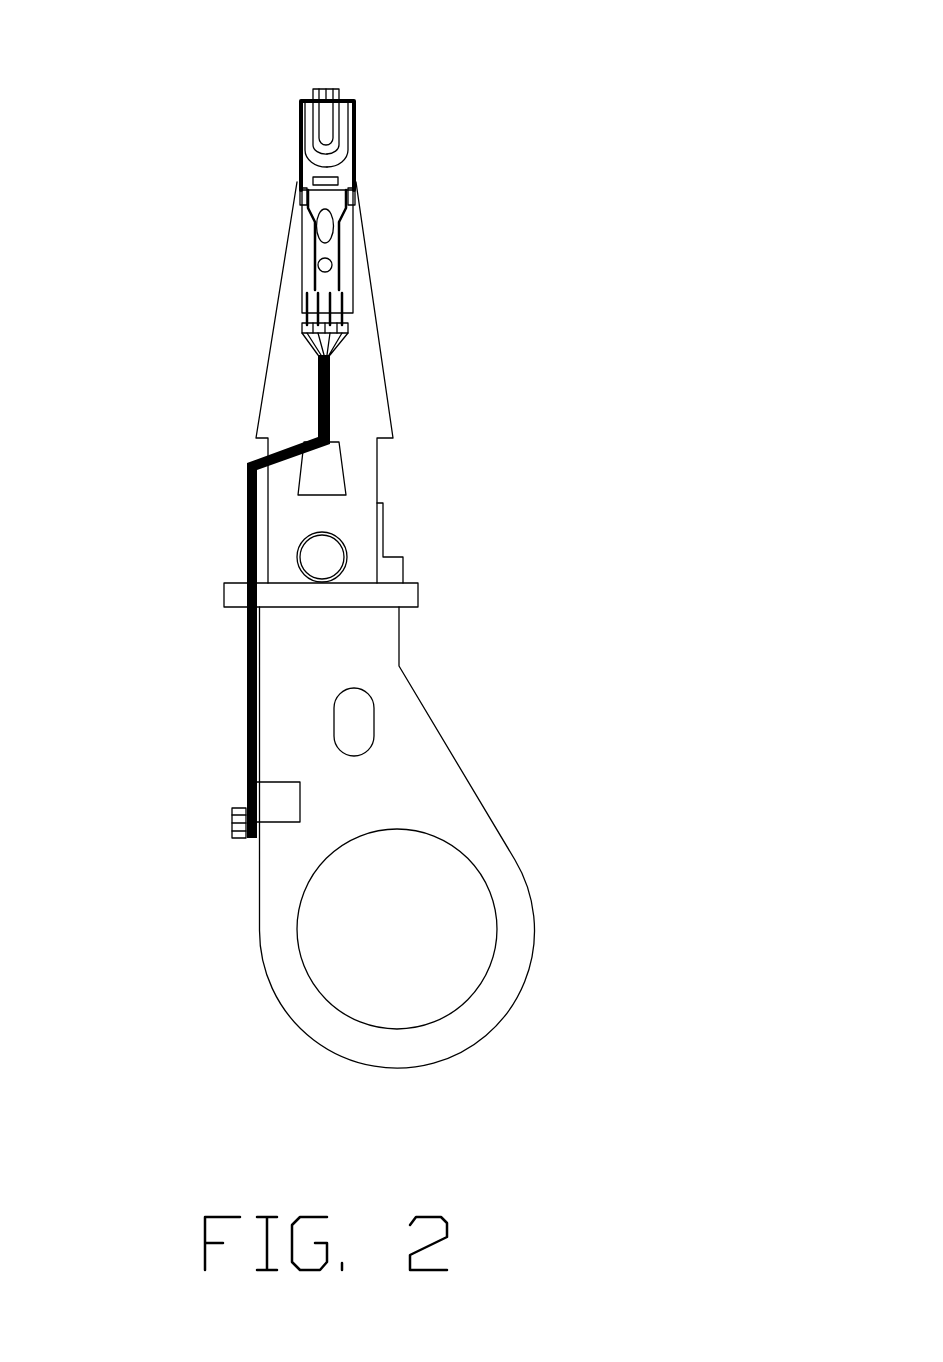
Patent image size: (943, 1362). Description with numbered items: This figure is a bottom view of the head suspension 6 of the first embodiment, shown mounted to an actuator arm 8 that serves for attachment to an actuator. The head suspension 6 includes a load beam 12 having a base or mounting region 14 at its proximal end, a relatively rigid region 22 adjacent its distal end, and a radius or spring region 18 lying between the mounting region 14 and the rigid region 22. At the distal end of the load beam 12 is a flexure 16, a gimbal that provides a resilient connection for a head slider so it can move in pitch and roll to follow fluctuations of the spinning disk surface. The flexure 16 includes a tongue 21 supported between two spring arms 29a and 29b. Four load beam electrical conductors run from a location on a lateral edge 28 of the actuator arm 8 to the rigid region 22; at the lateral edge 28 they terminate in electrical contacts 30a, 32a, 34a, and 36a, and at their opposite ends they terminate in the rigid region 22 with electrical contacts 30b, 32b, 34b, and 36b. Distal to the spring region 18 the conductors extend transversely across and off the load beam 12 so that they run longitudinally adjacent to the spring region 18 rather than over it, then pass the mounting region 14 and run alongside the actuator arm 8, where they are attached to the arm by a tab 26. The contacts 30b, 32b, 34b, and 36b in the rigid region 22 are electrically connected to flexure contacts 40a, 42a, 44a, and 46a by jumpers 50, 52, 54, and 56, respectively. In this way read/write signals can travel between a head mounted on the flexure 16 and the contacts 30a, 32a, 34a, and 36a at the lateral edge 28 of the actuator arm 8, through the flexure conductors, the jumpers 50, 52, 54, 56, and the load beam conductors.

The head suspension 6 is at (675, 540).
The actuator arm 8 is at (541, 955).
The load beam 12 is at (168, 466).
The mounting region 14 is at (384, 558).
The flexure 16 is at (360, 96).
The spring region 18 is at (378, 477).
The tongue 21 is at (300, 110).
The rigid region 22 is at (390, 418).
The tab 26 is at (287, 782).
The lateral edge 28 is at (258, 883).
The spring arm 29a is at (353, 130).
The spring arm 29b is at (300, 137).
The electrical contact 30a is at (237, 808).
The electrical contact 32a is at (232, 817).
The electrical contact 34a is at (232, 826).
The electrical contact 36a is at (235, 838).
The electrical contact 30b is at (303, 330).
The electrical contact 32b is at (310, 340).
The electrical contact 34b is at (348, 346).
The electrical contact 36b is at (348, 338).
The electrical contact 40a is at (303, 290).
The electrical contact 42a is at (310, 243).
The electrical contact 44a is at (345, 235).
The electrical contact 46a is at (347, 290).
The jumper 50 is at (303, 328).
The jumper 52 is at (300, 311).
The jumper 54 is at (345, 311).
The jumper 56 is at (347, 330).